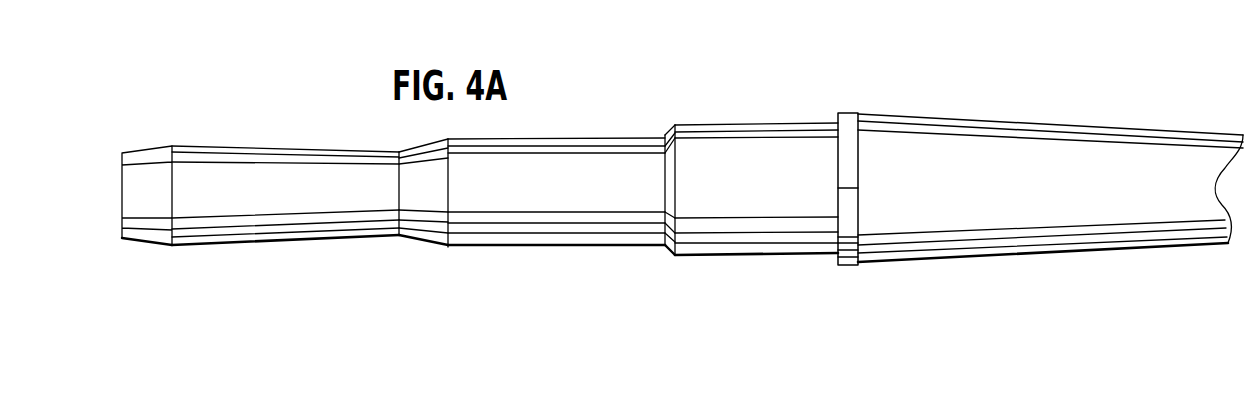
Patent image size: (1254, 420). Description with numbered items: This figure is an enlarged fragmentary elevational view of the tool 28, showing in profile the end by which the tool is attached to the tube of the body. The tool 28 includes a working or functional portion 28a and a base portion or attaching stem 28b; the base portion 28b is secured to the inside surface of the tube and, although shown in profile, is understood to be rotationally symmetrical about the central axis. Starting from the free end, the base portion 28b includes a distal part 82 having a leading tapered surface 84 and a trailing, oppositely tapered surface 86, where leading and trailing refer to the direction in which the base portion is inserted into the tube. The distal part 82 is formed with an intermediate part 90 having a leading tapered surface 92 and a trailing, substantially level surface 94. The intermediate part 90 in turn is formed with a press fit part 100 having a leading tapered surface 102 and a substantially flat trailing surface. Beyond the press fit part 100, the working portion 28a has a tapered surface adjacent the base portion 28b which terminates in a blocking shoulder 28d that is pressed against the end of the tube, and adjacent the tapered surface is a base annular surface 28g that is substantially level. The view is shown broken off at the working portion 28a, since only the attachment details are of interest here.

The leading tapered surface 84 is at (152, 148).
The distal part 82 is at (224, 180).
The trailing tapered surface 86 is at (292, 243).
The leading tapered surface 92 is at (412, 147).
The trailing level surface 94 is at (535, 134).
The intermediate part 90 is at (533, 190).
The leading tapered surface 102 is at (668, 250).
The press fit part 100 is at (716, 160).
The base portion 28b is at (778, 266).
The base annular surface 28g is at (848, 113).
The blocking shoulder 28d is at (838, 116).
The tool 28 is at (1060, 110).
The working portion 28a is at (1076, 258).